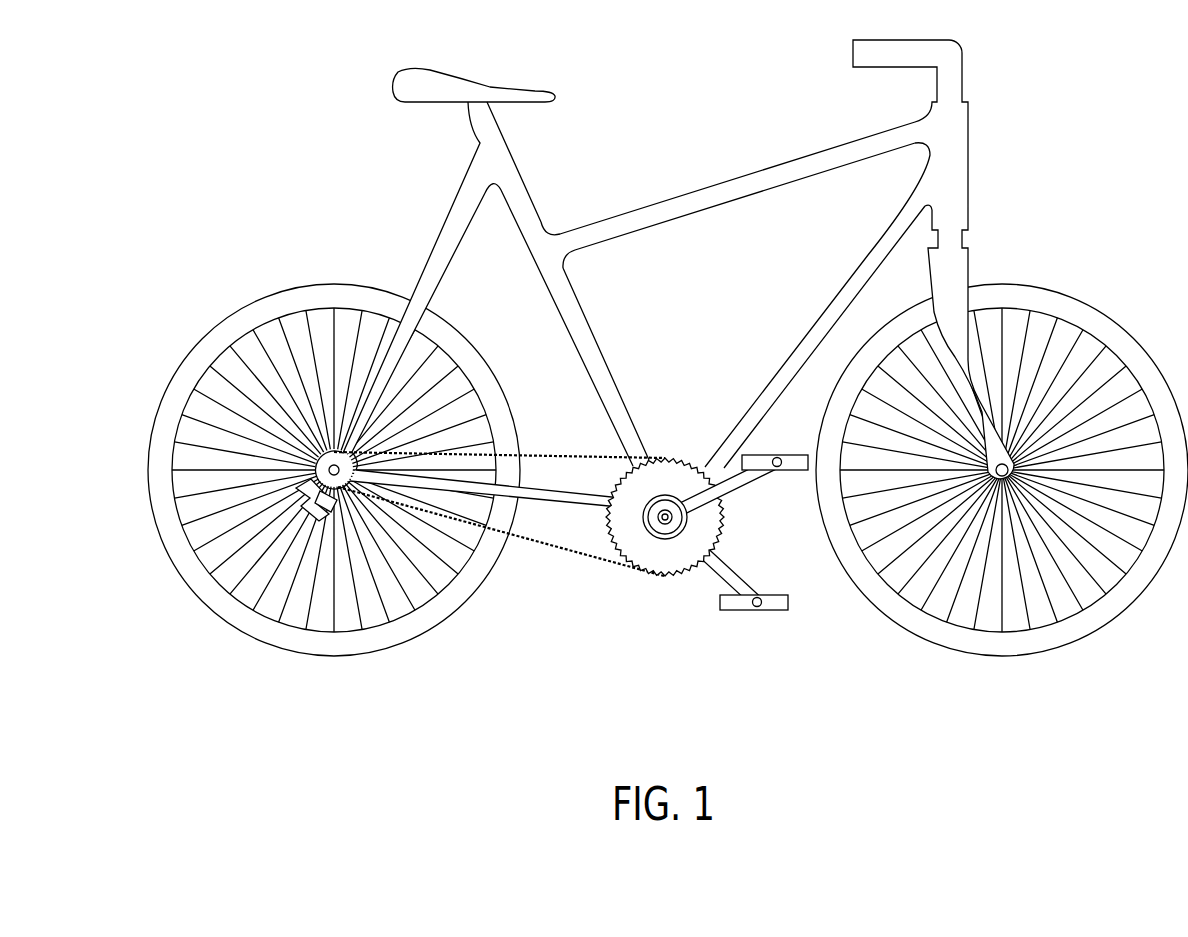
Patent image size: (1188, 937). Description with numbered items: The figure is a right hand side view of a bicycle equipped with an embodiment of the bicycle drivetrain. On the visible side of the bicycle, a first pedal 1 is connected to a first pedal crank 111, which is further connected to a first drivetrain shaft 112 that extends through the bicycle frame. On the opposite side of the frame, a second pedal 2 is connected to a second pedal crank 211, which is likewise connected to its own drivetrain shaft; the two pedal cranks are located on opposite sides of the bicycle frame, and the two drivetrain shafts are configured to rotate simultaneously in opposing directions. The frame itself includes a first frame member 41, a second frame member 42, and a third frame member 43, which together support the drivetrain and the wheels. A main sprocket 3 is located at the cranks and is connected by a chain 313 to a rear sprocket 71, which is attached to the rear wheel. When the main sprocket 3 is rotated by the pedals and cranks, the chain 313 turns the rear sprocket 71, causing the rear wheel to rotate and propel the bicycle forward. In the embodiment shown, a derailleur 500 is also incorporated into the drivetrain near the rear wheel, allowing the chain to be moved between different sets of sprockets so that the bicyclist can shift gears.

The first pedal 1 is at (762, 457).
The second pedal 2 is at (773, 607).
The main sprocket 3 is at (622, 567).
The first frame member 41 is at (818, 329).
The second frame member 42 is at (587, 342).
The third frame member 43 is at (550, 493).
The rear sprocket 71 is at (307, 482).
The first pedal crank 111 is at (730, 488).
The first drivetrain shaft 112 is at (625, 537).
The second pedal crank 211 is at (717, 567).
The chain 313 is at (517, 558).
The derailleur 500 is at (332, 497).